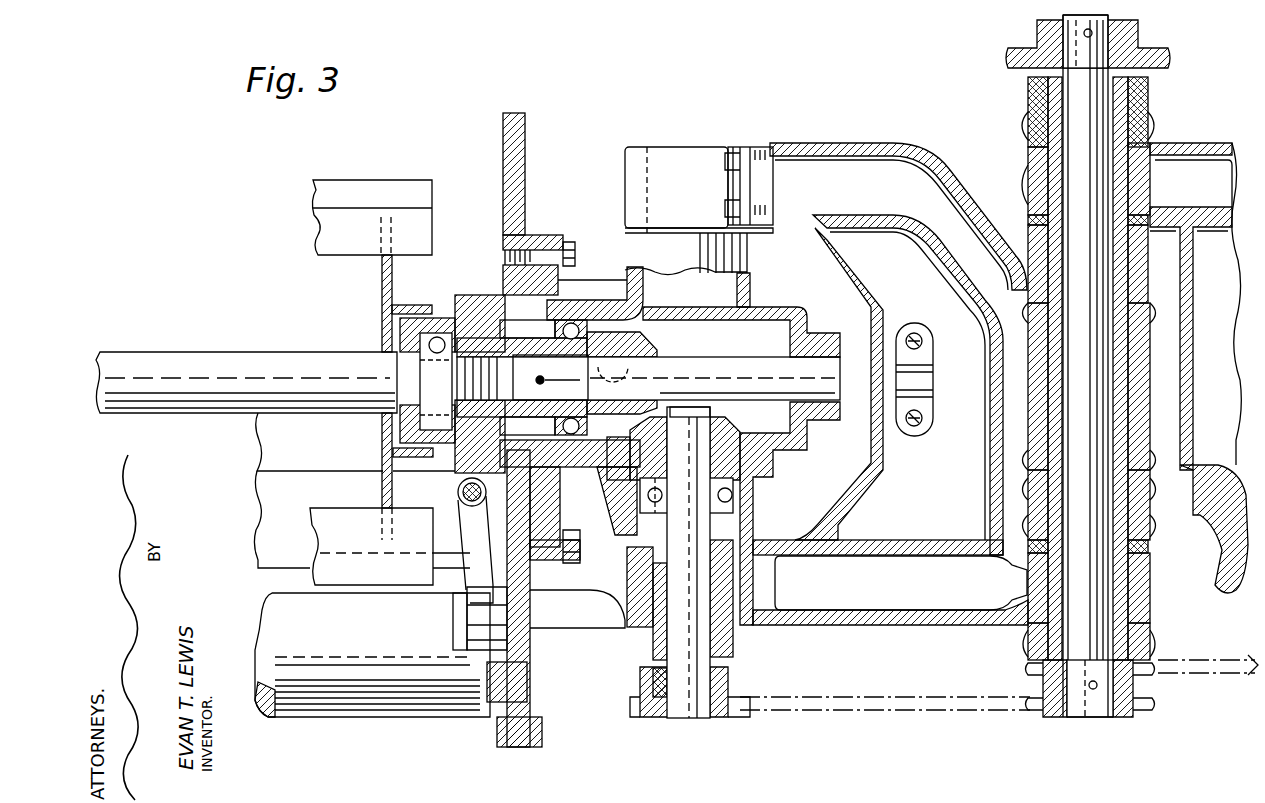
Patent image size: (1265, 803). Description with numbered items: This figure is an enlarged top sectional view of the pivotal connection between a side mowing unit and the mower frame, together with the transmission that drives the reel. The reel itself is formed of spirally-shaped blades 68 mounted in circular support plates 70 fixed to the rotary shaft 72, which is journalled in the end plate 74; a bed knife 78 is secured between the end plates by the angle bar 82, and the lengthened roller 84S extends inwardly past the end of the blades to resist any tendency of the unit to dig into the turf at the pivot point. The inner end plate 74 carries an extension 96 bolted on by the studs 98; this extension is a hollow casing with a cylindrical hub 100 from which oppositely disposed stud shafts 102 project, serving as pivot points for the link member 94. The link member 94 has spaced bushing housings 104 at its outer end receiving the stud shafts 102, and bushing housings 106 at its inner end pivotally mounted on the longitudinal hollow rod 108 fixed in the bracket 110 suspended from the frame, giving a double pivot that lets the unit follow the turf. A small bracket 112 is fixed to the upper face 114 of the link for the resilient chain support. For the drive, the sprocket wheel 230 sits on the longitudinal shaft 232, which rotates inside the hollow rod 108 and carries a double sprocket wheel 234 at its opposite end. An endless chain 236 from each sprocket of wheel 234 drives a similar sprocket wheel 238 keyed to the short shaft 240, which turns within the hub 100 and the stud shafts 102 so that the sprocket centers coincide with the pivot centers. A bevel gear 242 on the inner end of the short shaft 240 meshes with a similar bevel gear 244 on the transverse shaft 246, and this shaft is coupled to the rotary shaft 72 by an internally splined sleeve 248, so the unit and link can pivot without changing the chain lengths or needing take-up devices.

The spirally-shaped blades 68 is at (374, 190).
The circular support plates 70 is at (380, 286).
The rotary shaft 72 is at (221, 356).
The end plate 74 is at (512, 113).
The bed knife 78 is at (258, 450).
The angle bar 82 is at (257, 524).
The roller 84S is at (381, 597).
The link member 94 is at (886, 143).
The extension 96 is at (603, 282).
The studs 98 is at (570, 242).
The hub 100 is at (770, 318).
The stud shafts 102 is at (688, 147).
The bushing housings 104 is at (641, 147).
The bushing housings 106 is at (1165, 245).
The hollow rod 108 is at (1050, 433).
The bracket 110 is at (1028, 95).
The small bracket 112 is at (933, 385).
The upper face 114 is at (868, 257).
The sprocket wheel 230 is at (1142, 35).
The longitudinal shaft 232 is at (1088, 366).
The double sprocket wheel 234 is at (1122, 717).
The endless chain 236 is at (903, 712).
The sprocket wheel 238 is at (744, 690).
The short shaft 240 is at (682, 548).
The bevel gear 242 is at (738, 422).
The bevel gear 244 is at (640, 340).
The transverse shaft 246 is at (648, 377).
The internally splined sleeve 248 is at (490, 347).